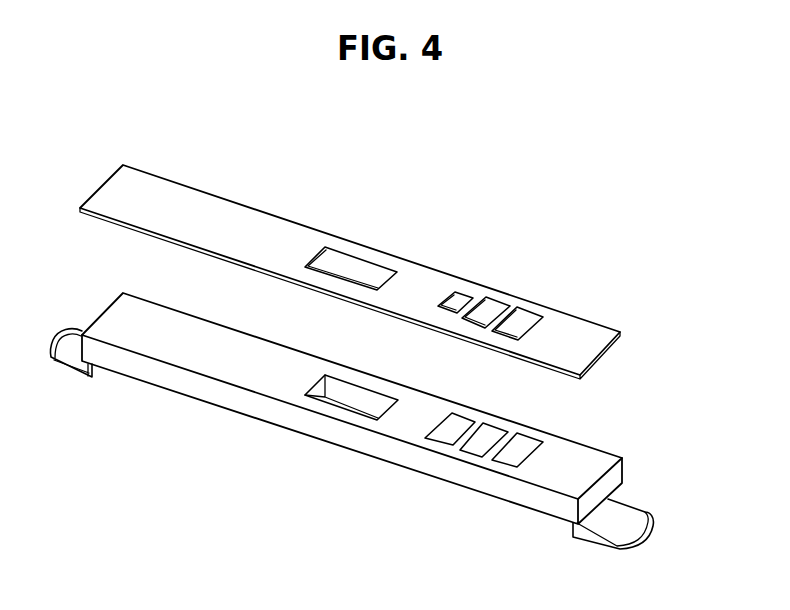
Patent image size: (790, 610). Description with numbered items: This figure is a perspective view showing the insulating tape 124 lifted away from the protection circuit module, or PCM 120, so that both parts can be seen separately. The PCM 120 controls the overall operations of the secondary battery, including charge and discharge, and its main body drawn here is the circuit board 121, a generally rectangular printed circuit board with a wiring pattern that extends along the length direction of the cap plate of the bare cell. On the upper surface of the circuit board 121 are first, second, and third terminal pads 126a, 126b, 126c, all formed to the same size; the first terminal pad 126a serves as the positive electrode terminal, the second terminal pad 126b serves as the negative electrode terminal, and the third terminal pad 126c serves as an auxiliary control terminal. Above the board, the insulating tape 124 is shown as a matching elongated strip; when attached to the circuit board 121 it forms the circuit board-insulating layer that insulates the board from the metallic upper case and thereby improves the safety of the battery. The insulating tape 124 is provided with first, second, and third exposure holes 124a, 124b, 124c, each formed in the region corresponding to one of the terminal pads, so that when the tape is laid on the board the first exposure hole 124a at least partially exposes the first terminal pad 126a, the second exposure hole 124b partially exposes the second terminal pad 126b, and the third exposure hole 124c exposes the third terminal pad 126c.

The protection circuit module (PCM) 120 is at (399, 439).
The circuit board 121 is at (240, 398).
The insulating tape 124 is at (394, 272).
The first exposure hole 124a is at (531, 320).
The second exposure hole 124b is at (462, 300).
The third exposure hole 124c is at (500, 306).
The first terminal pad 126a is at (508, 460).
The second terminal pad 126b is at (442, 430).
The third terminal pad 126c is at (475, 448).